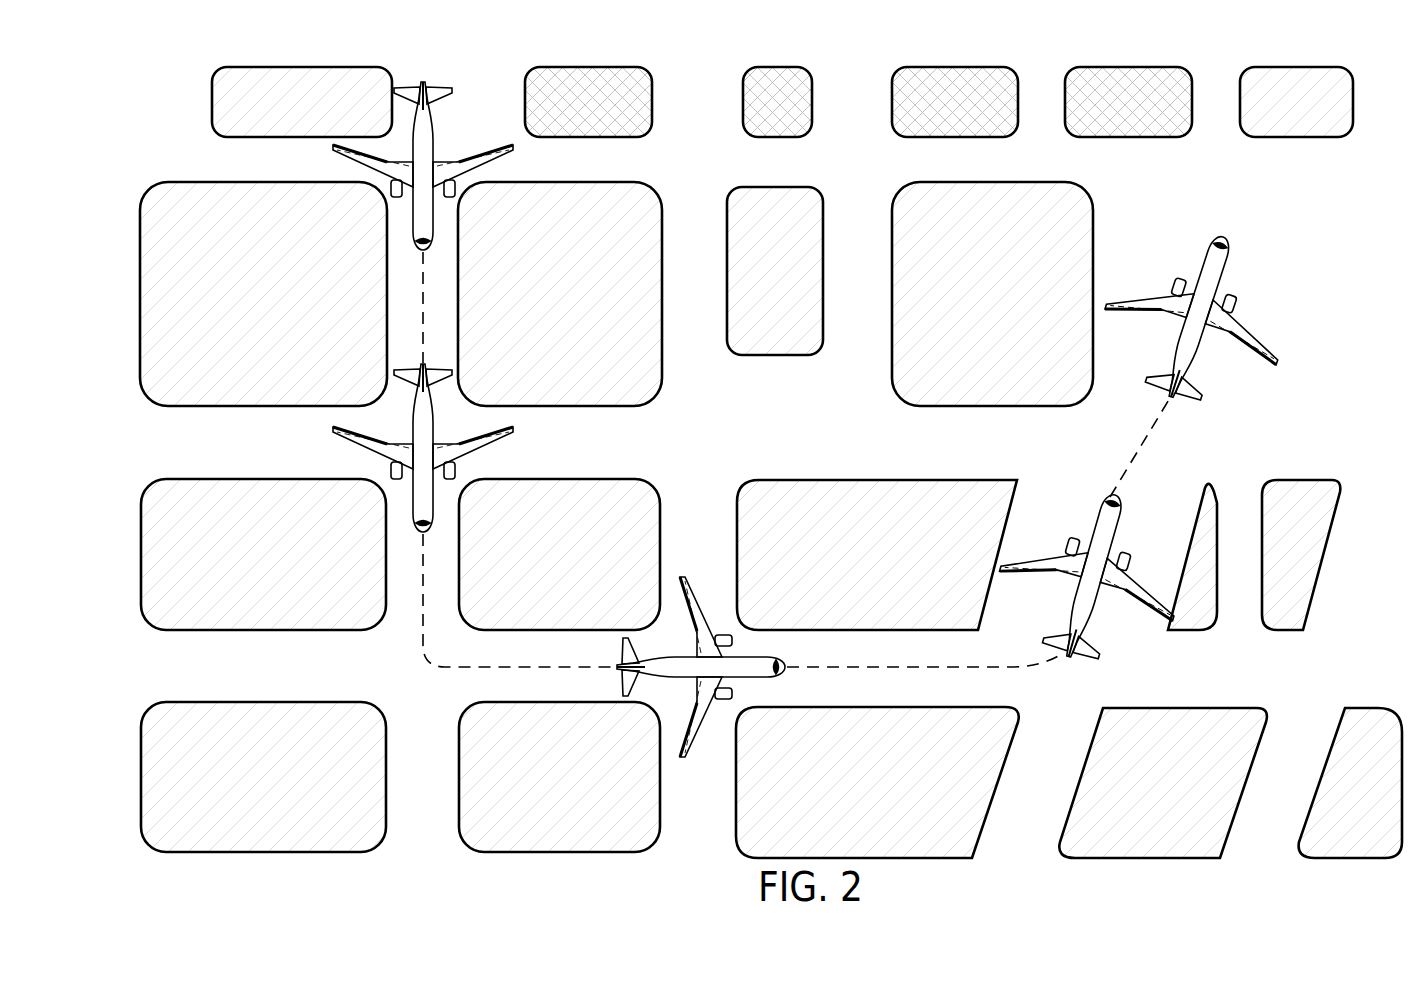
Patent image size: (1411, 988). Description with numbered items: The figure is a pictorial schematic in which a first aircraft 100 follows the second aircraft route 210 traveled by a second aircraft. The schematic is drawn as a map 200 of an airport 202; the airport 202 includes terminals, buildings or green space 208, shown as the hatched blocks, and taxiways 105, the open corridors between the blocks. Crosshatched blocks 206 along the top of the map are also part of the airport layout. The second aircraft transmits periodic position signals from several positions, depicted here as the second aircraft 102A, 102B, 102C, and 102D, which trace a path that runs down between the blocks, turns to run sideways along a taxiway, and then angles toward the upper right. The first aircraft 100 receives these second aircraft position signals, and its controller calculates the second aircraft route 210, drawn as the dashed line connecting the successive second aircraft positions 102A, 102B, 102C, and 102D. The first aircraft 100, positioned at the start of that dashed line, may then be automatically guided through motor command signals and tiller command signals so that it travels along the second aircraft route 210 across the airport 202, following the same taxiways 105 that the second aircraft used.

The first aircraft 100 is at (440, 86).
The second aircraft (first position) 102A is at (513, 428).
The second aircraft (second position) 102B is at (684, 577).
The second aircraft (third position) 102C is at (1095, 656).
The second aircraft (fourth position) 102D is at (1275, 358).
The taxiways 105 is at (832, 432).
The map 200 is at (1312, 408).
The airport 202 is at (1292, 210).
The gate / hangar structure 206 is at (653, 100).
The terminals, buildings or green space 208 is at (652, 186).
The second aircraft route 210 is at (418, 647).